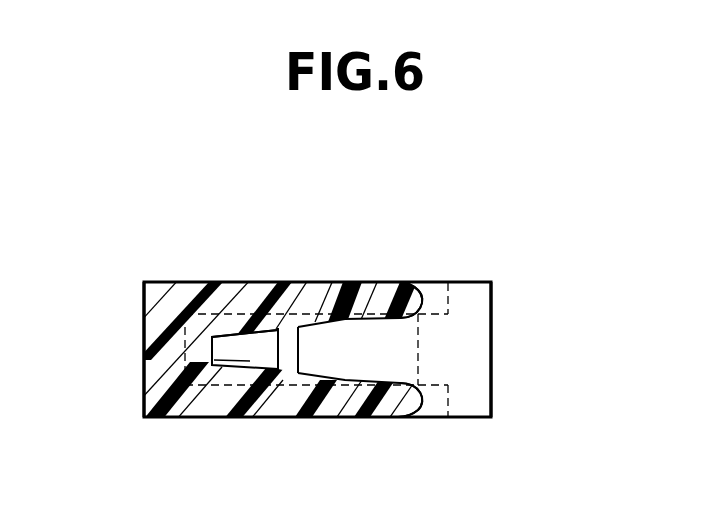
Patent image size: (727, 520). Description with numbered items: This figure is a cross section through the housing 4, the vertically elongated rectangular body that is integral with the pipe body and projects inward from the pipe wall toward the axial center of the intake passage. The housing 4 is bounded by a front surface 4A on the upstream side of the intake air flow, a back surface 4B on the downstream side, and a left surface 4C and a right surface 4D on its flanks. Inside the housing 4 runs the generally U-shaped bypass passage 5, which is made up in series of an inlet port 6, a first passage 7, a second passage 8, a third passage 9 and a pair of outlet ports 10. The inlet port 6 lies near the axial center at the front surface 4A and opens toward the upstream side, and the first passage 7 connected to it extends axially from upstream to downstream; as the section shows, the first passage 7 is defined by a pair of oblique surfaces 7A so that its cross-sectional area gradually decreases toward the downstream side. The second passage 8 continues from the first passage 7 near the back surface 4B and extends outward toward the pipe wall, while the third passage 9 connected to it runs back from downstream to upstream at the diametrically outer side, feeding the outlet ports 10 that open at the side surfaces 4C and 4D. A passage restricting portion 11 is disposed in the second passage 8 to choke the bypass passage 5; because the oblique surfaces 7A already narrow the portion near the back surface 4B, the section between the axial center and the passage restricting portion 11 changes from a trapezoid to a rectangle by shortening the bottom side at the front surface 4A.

The housing 4 is at (492, 306).
The front surface 4A is at (492, 362).
The back surface 4B is at (144, 388).
The left surface 4C is at (438, 402).
The right surface 4D is at (447, 285).
The bypass passage 5 is at (263, 325).
The inlet port 6 is at (402, 346).
The first passage 7 is at (357, 340).
The oblique surfaces 7A is at (321, 320).
The second passage 8 is at (184, 354).
The third passage 9 is at (267, 372).
The outlet ports 10 is at (436, 307).
The passage restricting portion 11 is at (222, 362).